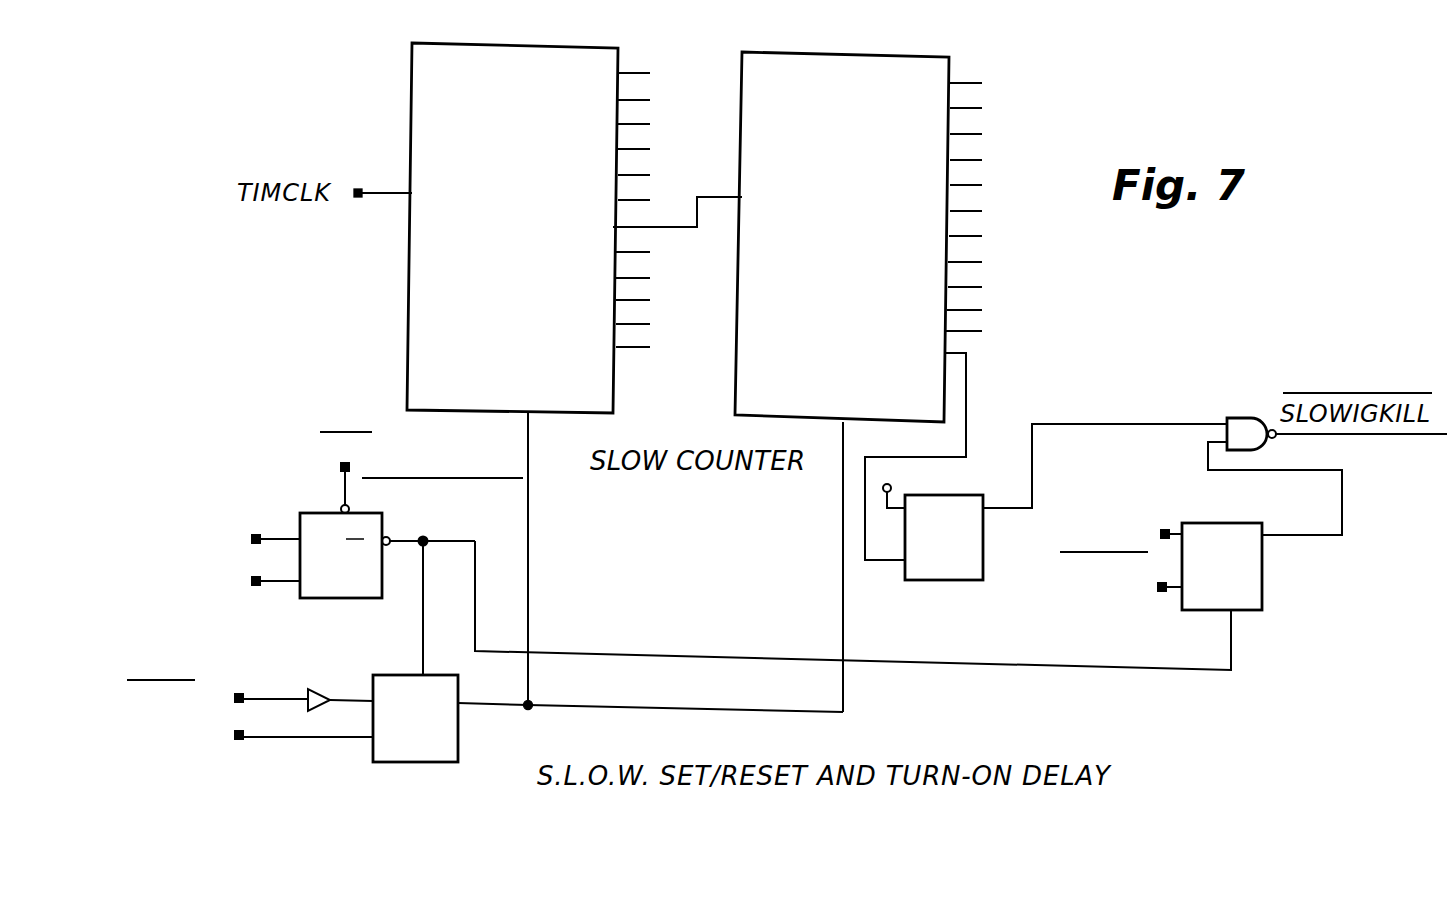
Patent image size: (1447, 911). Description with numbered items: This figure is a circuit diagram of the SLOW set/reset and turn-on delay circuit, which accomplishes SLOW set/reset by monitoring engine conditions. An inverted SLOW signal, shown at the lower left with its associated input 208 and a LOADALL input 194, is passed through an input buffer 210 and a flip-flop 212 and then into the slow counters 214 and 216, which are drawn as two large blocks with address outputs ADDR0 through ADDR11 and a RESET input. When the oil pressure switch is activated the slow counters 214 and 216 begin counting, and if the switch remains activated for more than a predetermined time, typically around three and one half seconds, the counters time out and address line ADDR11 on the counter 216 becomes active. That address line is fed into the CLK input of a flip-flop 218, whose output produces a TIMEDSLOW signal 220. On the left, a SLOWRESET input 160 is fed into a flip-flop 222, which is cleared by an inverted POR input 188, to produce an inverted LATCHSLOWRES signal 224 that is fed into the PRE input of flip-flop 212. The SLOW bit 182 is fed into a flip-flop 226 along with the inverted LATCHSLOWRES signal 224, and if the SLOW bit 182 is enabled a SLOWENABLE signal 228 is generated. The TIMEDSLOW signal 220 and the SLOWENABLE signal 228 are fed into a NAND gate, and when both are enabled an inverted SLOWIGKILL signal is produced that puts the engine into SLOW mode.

The slow counter 214 is at (422, 80).
The slow counter 216 is at (752, 70).
The flip-flop 218 is at (967, 492).
The TIMEDSLOW signal 220 is at (1181, 481).
The flip-flop 222 is at (348, 596).
The flip-flop 212 is at (402, 764).
The input buffer 210 is at (318, 690).
The SLOW-bar signal 208 is at (188, 681).
The POR-bar signal 188 is at (341, 428).
The SLOWRESET signal 160 is at (195, 520).
The LOADALL signal 194 is at (186, 597).
The inverted LATCHSLOWRES signal 224 is at (470, 478).
The SLOW bit 182 is at (1116, 512).
The flip-flop 226 is at (1247, 616).
The SLOWENABLE signal 228 is at (1357, 580).